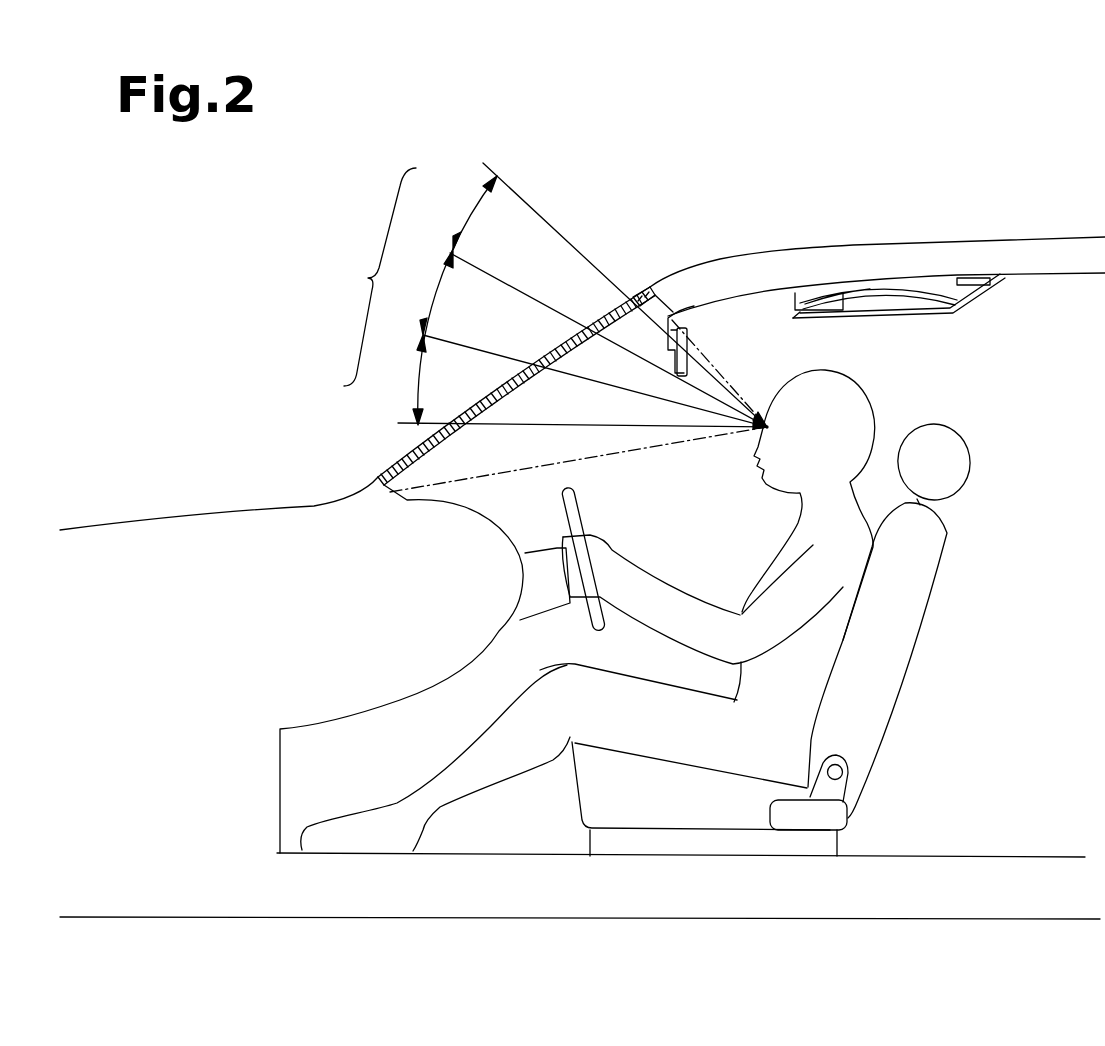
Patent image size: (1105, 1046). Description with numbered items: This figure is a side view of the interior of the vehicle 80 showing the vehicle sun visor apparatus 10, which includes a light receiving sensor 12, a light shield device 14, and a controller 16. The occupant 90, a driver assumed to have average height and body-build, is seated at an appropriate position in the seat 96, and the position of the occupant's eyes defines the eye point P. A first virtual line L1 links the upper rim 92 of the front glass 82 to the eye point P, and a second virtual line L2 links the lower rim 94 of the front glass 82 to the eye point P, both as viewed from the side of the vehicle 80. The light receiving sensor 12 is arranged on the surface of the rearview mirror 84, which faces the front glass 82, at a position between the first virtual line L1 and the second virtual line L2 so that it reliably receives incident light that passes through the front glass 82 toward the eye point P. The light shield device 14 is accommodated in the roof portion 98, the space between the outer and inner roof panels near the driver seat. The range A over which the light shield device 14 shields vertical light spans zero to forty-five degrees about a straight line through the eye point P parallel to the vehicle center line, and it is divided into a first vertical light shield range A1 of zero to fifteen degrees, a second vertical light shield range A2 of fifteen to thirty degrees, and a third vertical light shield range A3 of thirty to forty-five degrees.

The vehicle sun visor apparatus 10 is at (840, 246).
The light receiving sensor 12 is at (672, 378).
The light shield device 14 is at (892, 297).
The controller 16 is at (968, 275).
The vehicle 80 is at (1012, 245).
The front glass 82 is at (604, 320).
The rearview mirror 84 is at (688, 348).
The occupant 90 is at (853, 383).
The upper rim 92 is at (636, 292).
The lower rim 94 is at (378, 476).
The seat 96 is at (918, 640).
The roof portion 98 is at (973, 304).
The eye point P is at (778, 426).
The first virtual line L1 is at (722, 372).
The second virtual line L2 is at (647, 457).
The vertical light shield range A is at (420, 296).
The first vertical light shield range A1 is at (421, 373).
The second vertical light shield range A2 is at (437, 291).
The third vertical light shield range A3 is at (470, 215).